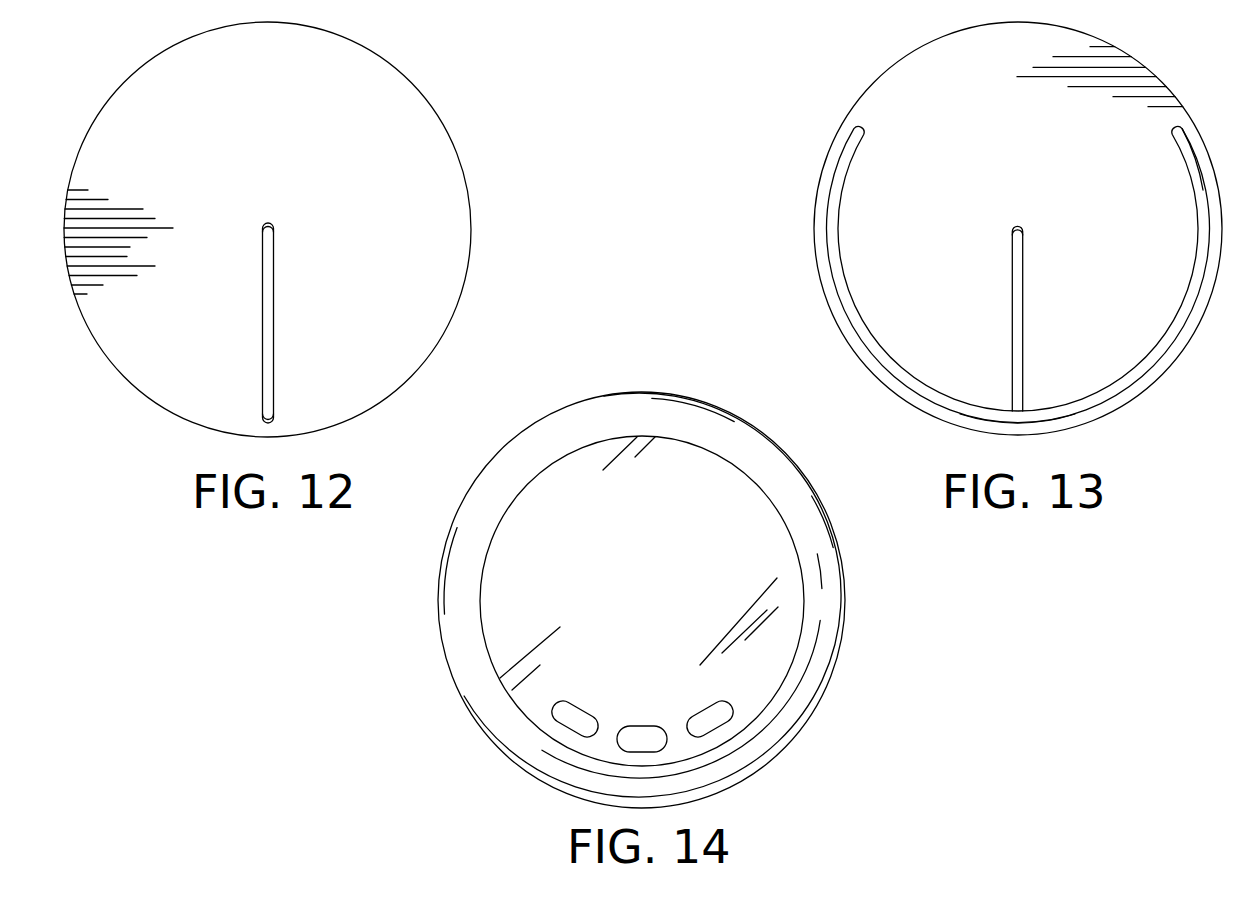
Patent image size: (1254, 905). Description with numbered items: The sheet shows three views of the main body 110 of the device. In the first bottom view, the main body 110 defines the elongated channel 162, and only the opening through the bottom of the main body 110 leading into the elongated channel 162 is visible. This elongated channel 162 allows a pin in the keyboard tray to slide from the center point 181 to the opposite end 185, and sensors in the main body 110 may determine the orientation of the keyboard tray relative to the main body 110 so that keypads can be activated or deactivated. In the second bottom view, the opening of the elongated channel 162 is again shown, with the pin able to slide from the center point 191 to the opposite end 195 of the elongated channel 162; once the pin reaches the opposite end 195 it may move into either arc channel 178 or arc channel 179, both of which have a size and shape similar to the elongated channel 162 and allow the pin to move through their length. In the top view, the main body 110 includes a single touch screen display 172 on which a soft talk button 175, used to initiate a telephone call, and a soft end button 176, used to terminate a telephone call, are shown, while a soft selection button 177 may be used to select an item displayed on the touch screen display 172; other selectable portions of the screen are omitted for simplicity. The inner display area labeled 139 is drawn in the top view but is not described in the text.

In FIG. 12, the main body 110 is at (439, 115).
In FIG. 13, the main body 110 is at (855, 103).
In FIG. 14, the main body 110 is at (478, 723).
In FIG. 12, the elongated channel 162 is at (273, 322).
In FIG. 13, the elongated channel 162 is at (1023, 323).
In FIG. 12, the center point 181 is at (268, 223).
In FIG. 12, the opposite end 185 is at (273, 418).
In FIG. 13, the center point 191 is at (1018, 225).
In FIG. 13, the arc channel 178 is at (838, 225).
In FIG. 13, the arc channel 179 is at (1190, 173).
In FIG. 13, the opposite end 195 is at (1015, 424).
In FIG. 14, the touch screen display 172 is at (585, 488).
In FIG. 14, the display 139 is at (777, 510).
In FIG. 14, the soft talk button 175 is at (590, 705).
In FIG. 14, the soft end button 176 is at (707, 704).
In FIG. 14, the soft selection button 177 is at (647, 724).